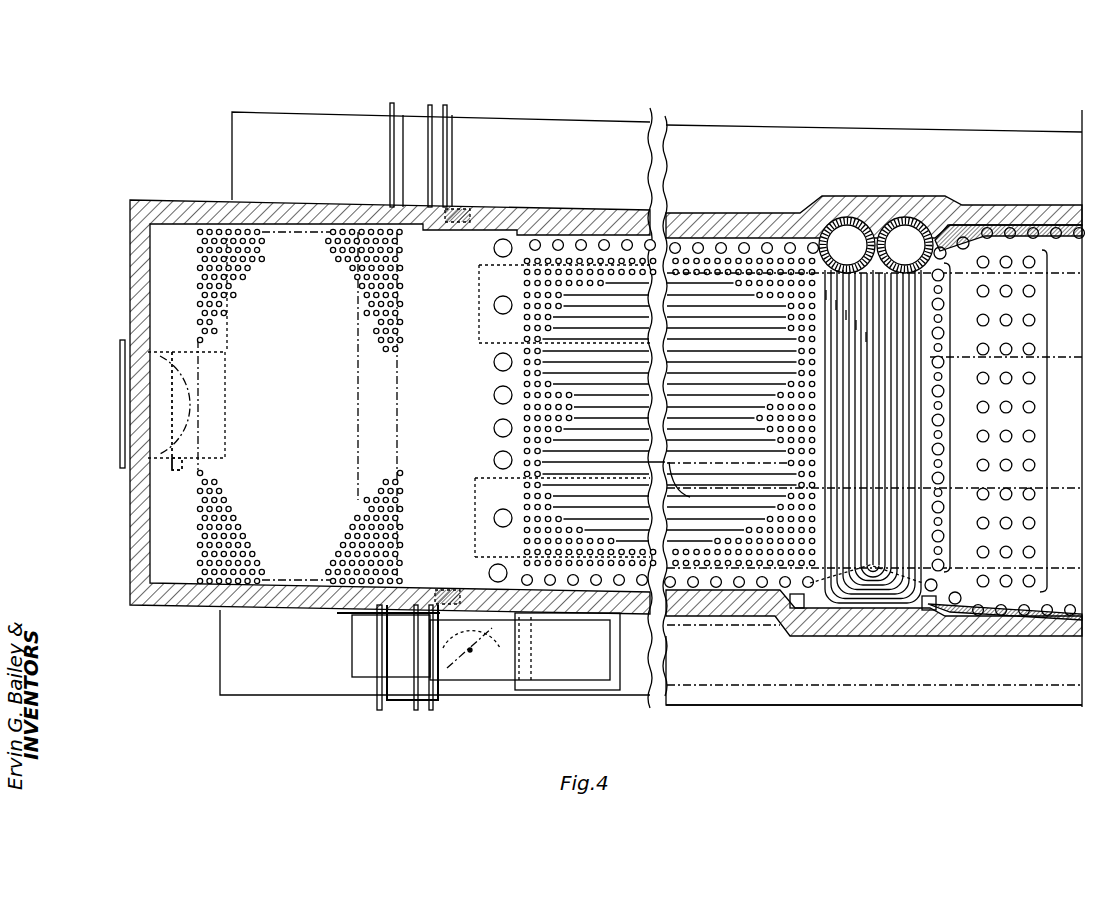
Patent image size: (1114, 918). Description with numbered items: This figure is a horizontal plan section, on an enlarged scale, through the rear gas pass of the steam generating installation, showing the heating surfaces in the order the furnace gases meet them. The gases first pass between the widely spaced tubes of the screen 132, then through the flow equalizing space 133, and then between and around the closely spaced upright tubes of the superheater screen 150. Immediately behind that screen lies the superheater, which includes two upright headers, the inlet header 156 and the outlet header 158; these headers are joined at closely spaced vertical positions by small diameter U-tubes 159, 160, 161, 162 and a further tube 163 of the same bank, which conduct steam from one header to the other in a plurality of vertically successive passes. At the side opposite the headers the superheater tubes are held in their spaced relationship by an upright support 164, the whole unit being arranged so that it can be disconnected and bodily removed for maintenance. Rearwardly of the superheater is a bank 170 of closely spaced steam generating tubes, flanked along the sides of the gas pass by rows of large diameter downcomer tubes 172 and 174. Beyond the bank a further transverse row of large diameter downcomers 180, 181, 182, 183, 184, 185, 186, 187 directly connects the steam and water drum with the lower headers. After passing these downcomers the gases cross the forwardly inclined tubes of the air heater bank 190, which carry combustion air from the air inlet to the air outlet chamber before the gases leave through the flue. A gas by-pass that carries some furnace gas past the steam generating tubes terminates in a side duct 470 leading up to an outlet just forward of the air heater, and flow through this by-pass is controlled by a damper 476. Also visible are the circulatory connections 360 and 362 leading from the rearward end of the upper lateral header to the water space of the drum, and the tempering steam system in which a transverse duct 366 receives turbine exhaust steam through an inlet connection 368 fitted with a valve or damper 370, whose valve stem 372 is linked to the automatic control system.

The screen 132 is at (1047, 413).
The flow equalizing space 133 is at (972, 460).
The superheater screen 150 is at (950, 418).
The inlet header 156 is at (852, 217).
The outlet header 158 is at (912, 217).
The U-tube 159 is at (826, 290).
The U-tube 160 is at (836, 300).
The U-tube 161 is at (846, 310).
The U-tube 162 is at (856, 320).
The tube 163 is at (866, 332).
The upright support 164 is at (880, 592).
The bank of steam generating tubes 170 is at (636, 486).
The downcomer tubes 172 is at (652, 240).
The downcomer tubes 174 is at (770, 605).
The downcomer tube 180 is at (494, 248).
The downcomer tube 181 is at (494, 305).
The downcomer tube 182 is at (494, 362).
The downcomer tube 183 is at (494, 395).
The downcomer tube 184 is at (494, 428).
The downcomer tube 185 is at (494, 460).
The downcomer tube 186 is at (494, 518).
The downcomer tube 187 is at (489, 571).
The bank of air heater tubes 190 is at (388, 340).
The circulatory connection 360 is at (775, 707).
The circulatory connection 362 is at (585, 121).
The transverse duct 366 is at (220, 648).
The inlet connection 368 is at (120, 380).
The valve or damper 370 is at (238, 400).
The valve stem 372 is at (175, 355).
The side duct 470 is at (505, 676).
The damper 476 is at (463, 655).